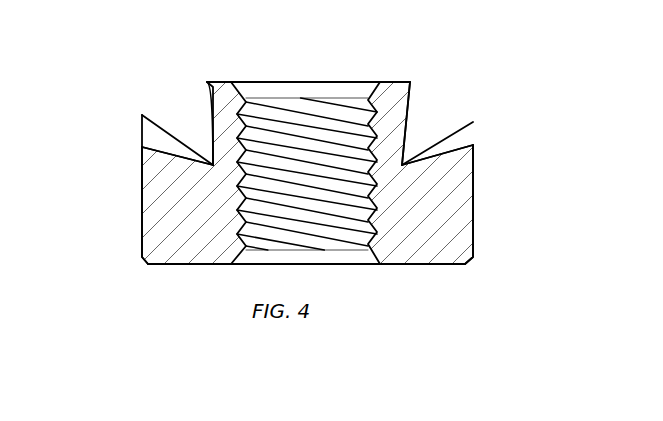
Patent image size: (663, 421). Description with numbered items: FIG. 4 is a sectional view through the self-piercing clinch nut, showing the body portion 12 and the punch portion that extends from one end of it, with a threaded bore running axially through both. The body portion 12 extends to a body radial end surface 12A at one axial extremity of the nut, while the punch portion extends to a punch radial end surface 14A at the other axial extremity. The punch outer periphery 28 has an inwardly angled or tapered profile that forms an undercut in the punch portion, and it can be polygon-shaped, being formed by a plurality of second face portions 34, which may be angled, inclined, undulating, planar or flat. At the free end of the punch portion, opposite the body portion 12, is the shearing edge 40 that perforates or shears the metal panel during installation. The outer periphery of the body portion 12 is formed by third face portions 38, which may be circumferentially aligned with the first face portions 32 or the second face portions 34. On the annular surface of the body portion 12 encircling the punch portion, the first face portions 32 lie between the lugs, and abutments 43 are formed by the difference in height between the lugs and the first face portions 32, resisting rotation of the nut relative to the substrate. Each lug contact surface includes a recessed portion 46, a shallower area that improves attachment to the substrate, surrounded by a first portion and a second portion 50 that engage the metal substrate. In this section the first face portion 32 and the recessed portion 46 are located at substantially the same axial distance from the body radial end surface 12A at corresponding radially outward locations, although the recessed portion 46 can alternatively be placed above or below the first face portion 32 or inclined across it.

The body portion 12 is at (492, 170).
The body radial end surface 12A is at (441, 265).
The punch radial end surface 14A is at (212, 80).
The punch outer periphery 28 is at (424, 90).
The first face portion 32 is at (151, 147).
The second face portion 34 is at (205, 119).
The third face portion 38 is at (141, 197).
The shearing edge 40 is at (410, 82).
The abutment 43 is at (152, 128).
The recessed portion 46 is at (444, 153).
The second portion 50 is at (156, 117).